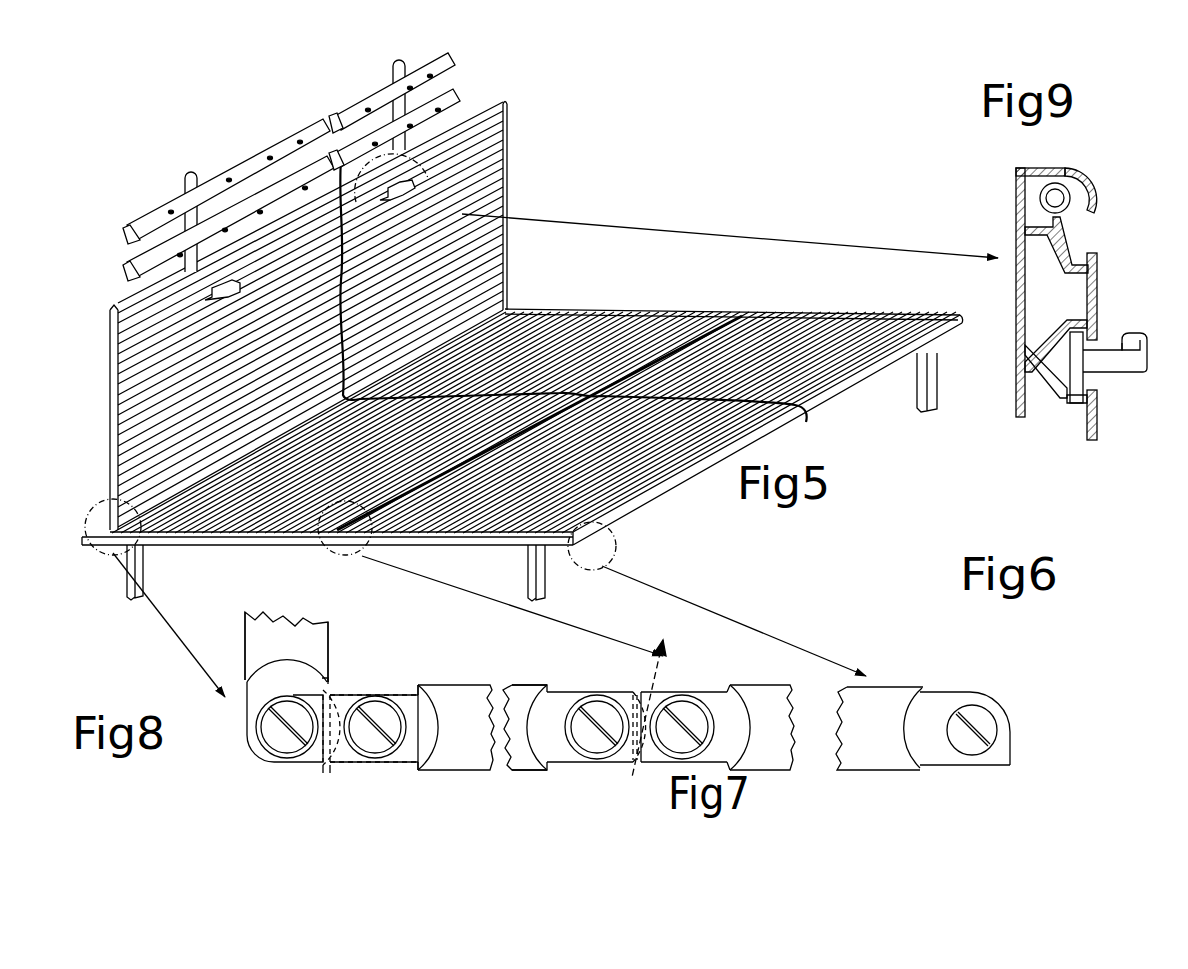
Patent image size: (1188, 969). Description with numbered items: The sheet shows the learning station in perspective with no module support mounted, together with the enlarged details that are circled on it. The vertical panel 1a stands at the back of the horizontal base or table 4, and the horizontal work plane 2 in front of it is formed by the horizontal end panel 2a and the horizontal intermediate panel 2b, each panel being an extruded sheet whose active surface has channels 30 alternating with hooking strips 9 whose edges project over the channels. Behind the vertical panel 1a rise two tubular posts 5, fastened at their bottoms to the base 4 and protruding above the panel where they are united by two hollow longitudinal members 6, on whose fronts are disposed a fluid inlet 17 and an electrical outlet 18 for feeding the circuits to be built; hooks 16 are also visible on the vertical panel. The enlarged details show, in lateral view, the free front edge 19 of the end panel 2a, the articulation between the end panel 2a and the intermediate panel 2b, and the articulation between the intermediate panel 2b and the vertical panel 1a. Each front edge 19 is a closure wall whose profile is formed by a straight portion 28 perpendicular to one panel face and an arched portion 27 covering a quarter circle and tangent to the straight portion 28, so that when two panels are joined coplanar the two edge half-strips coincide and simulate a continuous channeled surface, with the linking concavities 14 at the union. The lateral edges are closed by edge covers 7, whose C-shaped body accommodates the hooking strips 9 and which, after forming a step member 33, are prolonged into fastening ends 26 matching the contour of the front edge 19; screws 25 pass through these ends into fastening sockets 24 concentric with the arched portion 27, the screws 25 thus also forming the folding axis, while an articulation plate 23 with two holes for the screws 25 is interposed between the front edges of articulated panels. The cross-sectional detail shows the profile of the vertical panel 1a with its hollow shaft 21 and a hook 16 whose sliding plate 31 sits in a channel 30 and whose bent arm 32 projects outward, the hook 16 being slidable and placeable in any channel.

In FIG. 5, the vertical panel 1a is at (455, 268).
In FIG. 9, the vertical panel 1a is at (1020, 195).
In FIG. 8, the vertical panel 1a is at (268, 632).
In FIG. 7, the horizontal work plane 2 is at (768, 740).
In FIG. 6, the horizontal work plane 2 is at (857, 723).
In FIG. 5, the horizontal end panel 2a is at (858, 338).
In FIG. 5, the horizontal intermediate panel 2b is at (570, 345).
In FIG. 8, the horizontal intermediate panel 2b is at (458, 732).
In FIG. 7, the horizontal intermediate panel 2b is at (518, 763).
In FIG. 5, the horizontal base or table 4 is at (205, 540).
In FIG. 5, the tubular post 5 is at (186, 182).
In FIG. 5, the hollow longitudinal member 6 is at (450, 92).
In FIG. 5, the edge covers 7 is at (507, 178).
In FIG. 8, the edge covers 7 is at (286, 647).
In FIG. 7, the edge covers 7 is at (529, 727).
In FIG. 9, the hooking strip 9 is at (1093, 285).
In FIG. 7, the linking concavities 14 is at (655, 724).
In FIG. 5, the hook 16 is at (400, 187).
In FIG. 9, the hook 16 is at (1140, 337).
In FIG. 5, the fluid inlet 17 is at (148, 225).
In FIG. 5, the electrical outlet 18 is at (160, 260).
In FIG. 5, the front edge 19 is at (652, 490).
In FIG. 9, the hollow shaft 21 is at (1050, 293).
In FIG. 8, the articulation member or plate 23 is at (355, 758).
In FIG. 7, the articulation member or plate 23 is at (624, 760).
In FIG. 9, the fastening socket 24 is at (1065, 195).
In FIG. 8, the screw 25 is at (375, 715).
In FIG. 7, the screw 25 is at (600, 720).
In FIG. 6, the screw 25 is at (972, 716).
In FIG. 8, the fastening end 26 is at (287, 675).
In FIG. 7, the fastening end 26 is at (720, 720).
In FIG. 6, the fastening end 26 is at (920, 733).
In FIG. 8, the arched portion of front edge 27 is at (335, 705).
In FIG. 6, the arched portion of front edge 27 is at (1000, 710).
In FIG. 8, the straight portion of front edge 28 is at (308, 766).
In FIG. 6, the straight portion of front edge 28 is at (1010, 750).
In FIG. 9, the channel 30 is at (1062, 365).
In FIG. 9, the sliding plate of hook 31 is at (1078, 357).
In FIG. 9, the bent arm of hook 32 is at (1108, 360).
In FIG. 8, the step member of edge cover 33 is at (312, 663).
In FIG. 7, the step member of edge cover 33 is at (528, 718).
In FIG. 6, the step member of edge cover 33 is at (908, 706).